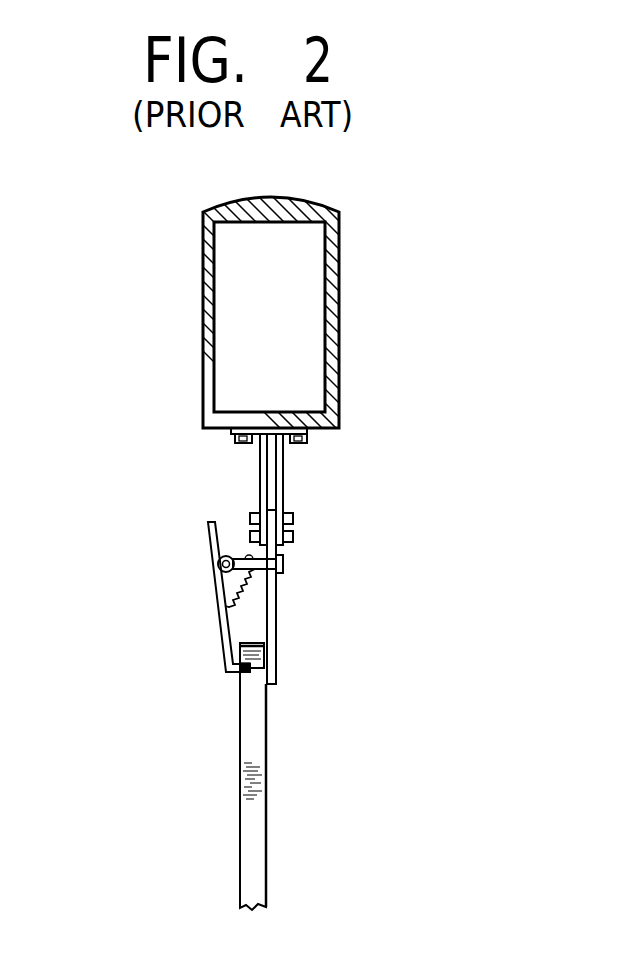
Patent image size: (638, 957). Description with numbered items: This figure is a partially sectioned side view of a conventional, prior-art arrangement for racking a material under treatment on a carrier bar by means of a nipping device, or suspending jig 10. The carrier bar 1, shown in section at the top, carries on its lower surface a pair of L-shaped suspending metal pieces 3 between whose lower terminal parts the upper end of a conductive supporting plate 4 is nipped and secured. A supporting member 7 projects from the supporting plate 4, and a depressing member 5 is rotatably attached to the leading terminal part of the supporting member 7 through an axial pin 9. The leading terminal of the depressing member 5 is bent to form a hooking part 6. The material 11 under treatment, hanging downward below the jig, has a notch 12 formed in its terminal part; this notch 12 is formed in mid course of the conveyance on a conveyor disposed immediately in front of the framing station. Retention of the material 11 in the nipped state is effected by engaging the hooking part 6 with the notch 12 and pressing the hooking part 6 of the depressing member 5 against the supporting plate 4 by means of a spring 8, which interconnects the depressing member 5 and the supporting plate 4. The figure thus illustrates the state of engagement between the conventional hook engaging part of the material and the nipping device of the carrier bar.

The carrier bar 1 is at (339, 335).
The L-shaped suspending metal pieces 3 is at (260, 466).
The supporting plate 4 is at (277, 626).
The depressing member 5 is at (216, 588).
The hooking part 6 is at (240, 668).
The supporting member 7 is at (276, 581).
The spring 8 is at (258, 590).
The axial pin 9 is at (225, 555).
The nipping device (suspending jig) 10 is at (196, 556).
The material under treatment 11 is at (266, 848).
The notch 12 is at (253, 670).